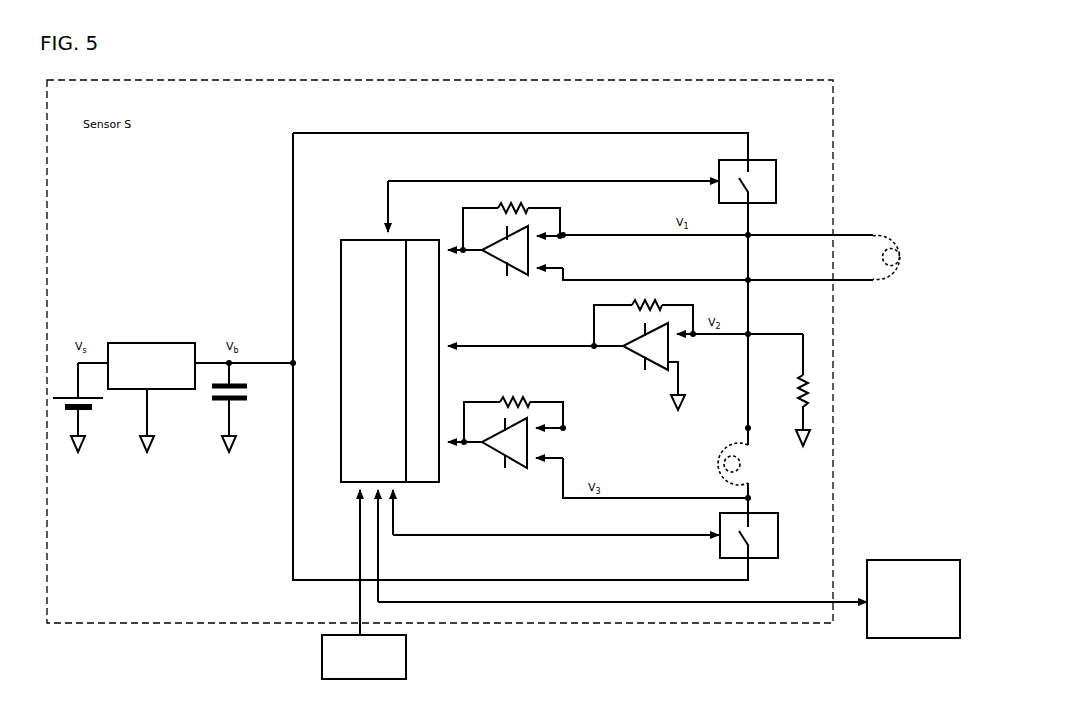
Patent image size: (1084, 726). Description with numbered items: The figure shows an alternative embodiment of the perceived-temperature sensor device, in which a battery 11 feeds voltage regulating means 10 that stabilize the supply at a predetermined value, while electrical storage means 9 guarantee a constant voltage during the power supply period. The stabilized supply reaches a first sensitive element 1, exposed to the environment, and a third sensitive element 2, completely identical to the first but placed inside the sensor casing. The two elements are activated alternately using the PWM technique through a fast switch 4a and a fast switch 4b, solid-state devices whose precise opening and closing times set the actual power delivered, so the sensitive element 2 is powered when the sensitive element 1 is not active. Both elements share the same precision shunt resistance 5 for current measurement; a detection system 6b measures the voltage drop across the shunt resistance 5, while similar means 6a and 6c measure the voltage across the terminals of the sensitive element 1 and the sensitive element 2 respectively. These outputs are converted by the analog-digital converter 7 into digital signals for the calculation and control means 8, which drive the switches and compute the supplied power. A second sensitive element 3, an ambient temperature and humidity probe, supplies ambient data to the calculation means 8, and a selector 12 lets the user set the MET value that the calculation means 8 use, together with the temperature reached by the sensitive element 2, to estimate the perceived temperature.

The first sensitive element 1 is at (843, 277).
The third sensitive element 2 is at (705, 464).
The second sensitive element 3 is at (913, 586).
The fast switch 4a is at (771, 184).
The fast switch 4b is at (772, 536).
The shunt resistance 5 is at (810, 390).
The voltage measuring means 6a is at (598, 251).
The detection system 6b is at (570, 355).
The voltage measuring means 6c is at (598, 449).
The analog-digital converter 7 is at (422, 361).
The calculation and control means 8 is at (604, 408).
The electrical storage means 9 is at (239, 406).
The voltage regulating means 10 is at (185, 387).
The battery 11 is at (74, 407).
The selector 12 is at (379, 657).